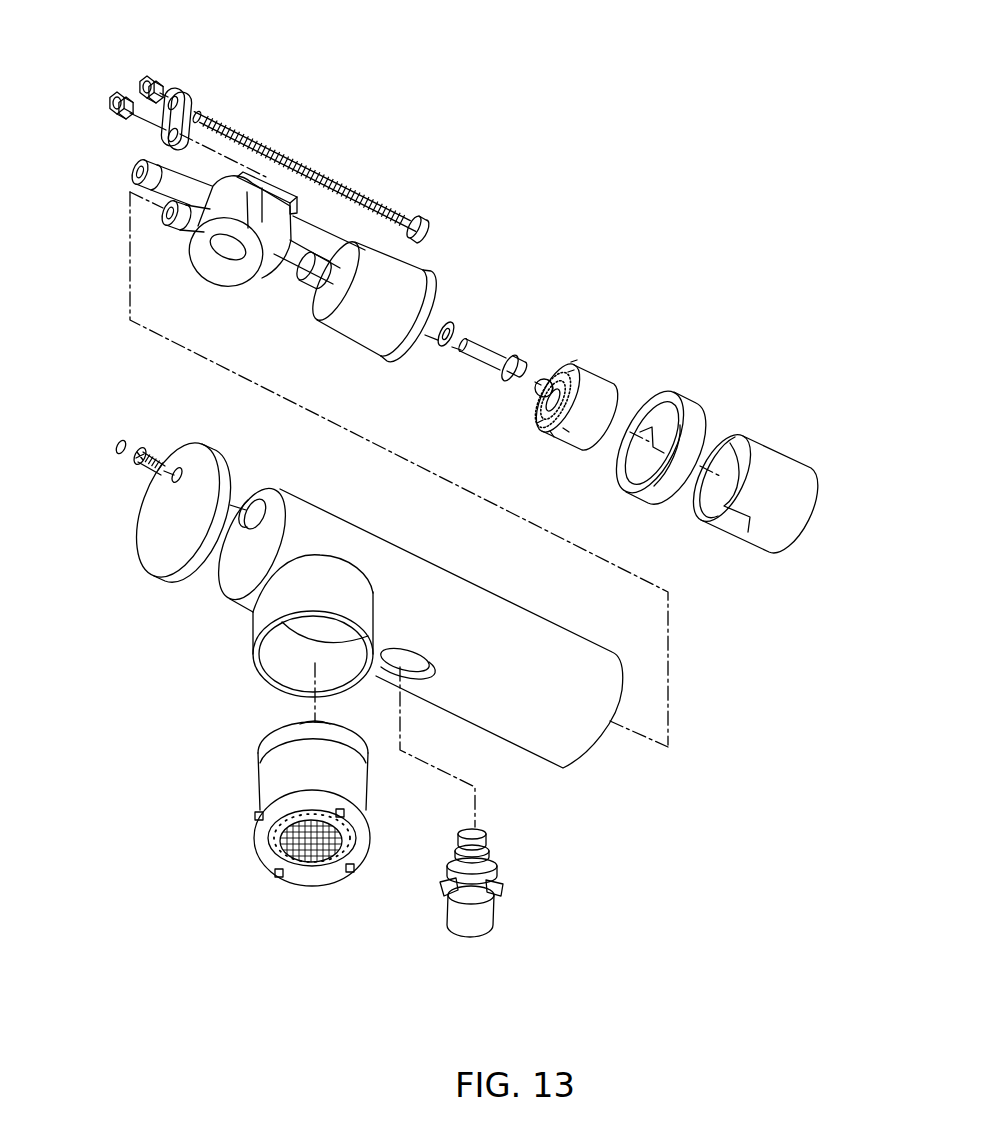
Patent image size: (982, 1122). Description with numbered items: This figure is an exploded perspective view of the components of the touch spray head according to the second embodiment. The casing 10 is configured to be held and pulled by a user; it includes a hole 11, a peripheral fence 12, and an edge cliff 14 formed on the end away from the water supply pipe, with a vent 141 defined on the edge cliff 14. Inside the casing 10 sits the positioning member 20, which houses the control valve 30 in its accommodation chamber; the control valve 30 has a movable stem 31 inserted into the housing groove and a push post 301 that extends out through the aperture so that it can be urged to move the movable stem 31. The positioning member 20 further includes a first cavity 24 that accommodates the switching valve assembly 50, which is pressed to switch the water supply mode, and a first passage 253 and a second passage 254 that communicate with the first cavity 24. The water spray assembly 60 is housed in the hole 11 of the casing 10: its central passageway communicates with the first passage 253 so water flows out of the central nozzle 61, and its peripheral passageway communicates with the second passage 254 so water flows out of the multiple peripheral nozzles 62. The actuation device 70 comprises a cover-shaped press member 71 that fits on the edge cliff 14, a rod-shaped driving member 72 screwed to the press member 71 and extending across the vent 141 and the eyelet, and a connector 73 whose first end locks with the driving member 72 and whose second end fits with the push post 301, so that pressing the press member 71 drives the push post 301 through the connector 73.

The casing 10 is at (417, 646).
The hole 11 is at (273, 663).
The peripheral fence 12 is at (520, 737).
The edge cliff 14 is at (239, 547).
The vent 141 is at (251, 499).
The positioning member 20 is at (286, 385).
The first cavity 24 is at (223, 262).
The first passage 253 is at (134, 173).
The second passage 254 is at (166, 211).
The control valve 30 is at (603, 371).
The push post 301 is at (500, 347).
The movable stem 31 is at (543, 377).
The switching valve assembly 50 is at (503, 907).
The water spray assembly 60 is at (284, 849).
The central nozzle 61 is at (318, 853).
The peripheral nozzles 62 is at (275, 845).
The actuation device 70 is at (155, 519).
The press member 71 is at (157, 540).
The driving member 72 is at (304, 164).
The connector 73 is at (181, 96).